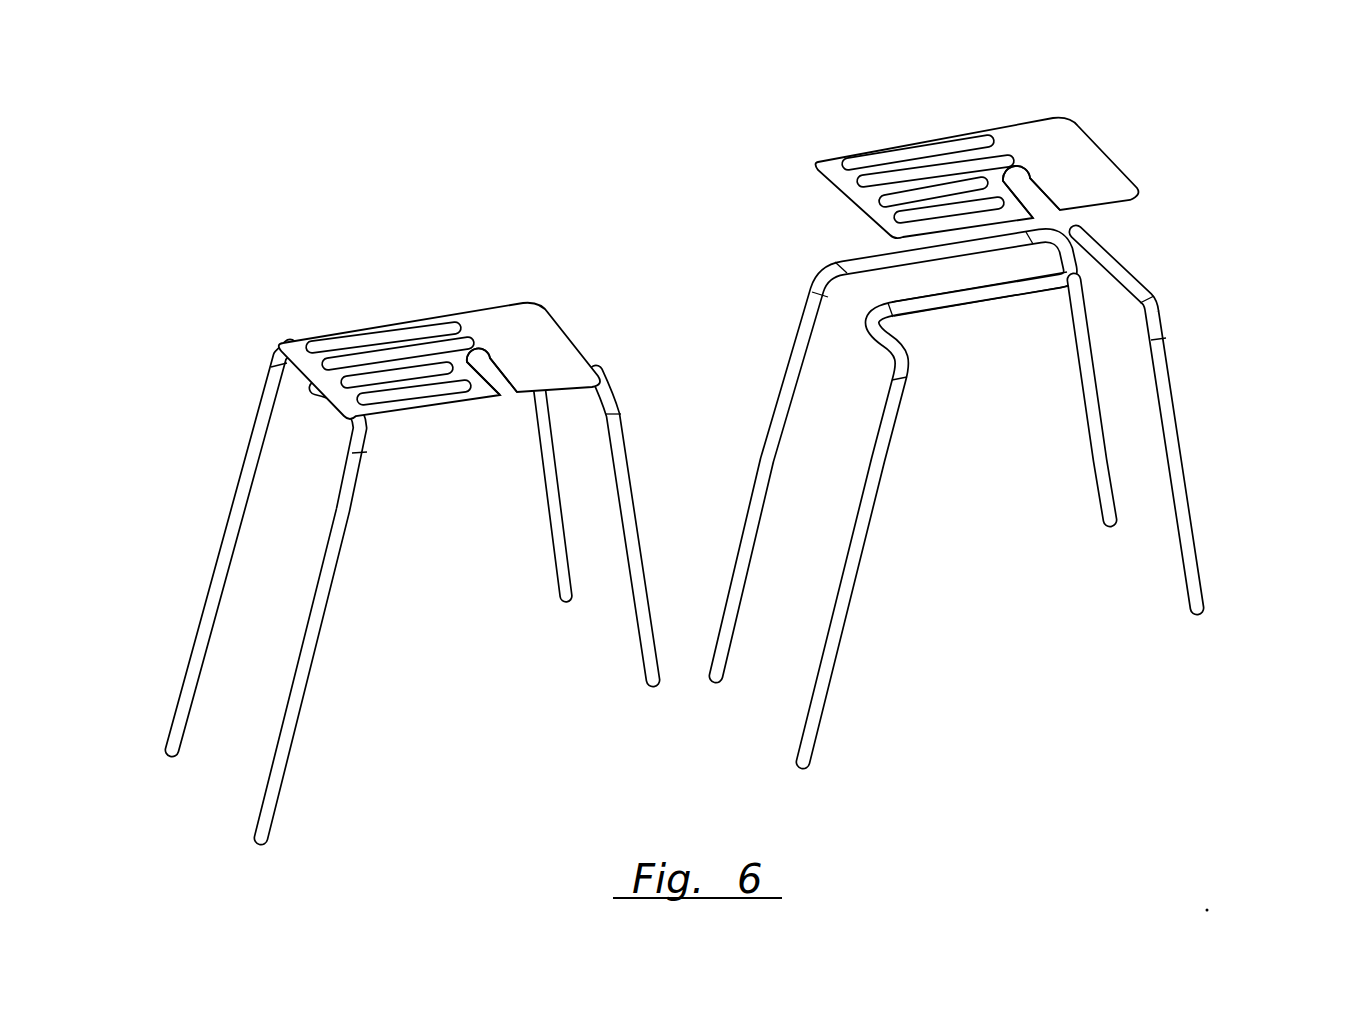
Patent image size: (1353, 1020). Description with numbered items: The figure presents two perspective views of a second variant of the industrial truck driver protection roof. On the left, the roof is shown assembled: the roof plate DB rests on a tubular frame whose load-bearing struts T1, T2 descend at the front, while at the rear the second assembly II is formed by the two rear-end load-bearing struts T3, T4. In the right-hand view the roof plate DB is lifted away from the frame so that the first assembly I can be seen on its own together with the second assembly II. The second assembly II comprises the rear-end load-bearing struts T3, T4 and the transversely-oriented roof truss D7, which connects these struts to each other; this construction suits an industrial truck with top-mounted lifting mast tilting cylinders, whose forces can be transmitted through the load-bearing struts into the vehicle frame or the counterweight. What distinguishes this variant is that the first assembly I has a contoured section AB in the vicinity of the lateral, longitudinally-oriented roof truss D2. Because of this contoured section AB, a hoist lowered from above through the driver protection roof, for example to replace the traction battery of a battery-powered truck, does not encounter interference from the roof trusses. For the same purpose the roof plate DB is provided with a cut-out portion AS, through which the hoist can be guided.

The first assembly I is at (990, 480).
The second assembly II is at (740, 578).
The roof plate DB is at (506, 332).
The cut-out portion AS is at (504, 384).
The contoured section AB is at (986, 320).
The lateral, longitudinally-oriented roof truss D2 is at (937, 302).
The transversely-oriented roof truss D7 is at (1110, 272).
The load-bearing strut T1 is at (235, 508).
The load-bearing strut T2 is at (315, 628).
The rear-end load-bearing strut T3 is at (545, 440).
The rear-end load-bearing strut T4 is at (632, 520).